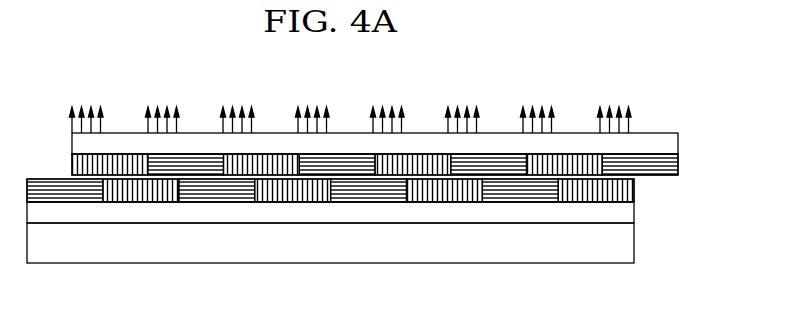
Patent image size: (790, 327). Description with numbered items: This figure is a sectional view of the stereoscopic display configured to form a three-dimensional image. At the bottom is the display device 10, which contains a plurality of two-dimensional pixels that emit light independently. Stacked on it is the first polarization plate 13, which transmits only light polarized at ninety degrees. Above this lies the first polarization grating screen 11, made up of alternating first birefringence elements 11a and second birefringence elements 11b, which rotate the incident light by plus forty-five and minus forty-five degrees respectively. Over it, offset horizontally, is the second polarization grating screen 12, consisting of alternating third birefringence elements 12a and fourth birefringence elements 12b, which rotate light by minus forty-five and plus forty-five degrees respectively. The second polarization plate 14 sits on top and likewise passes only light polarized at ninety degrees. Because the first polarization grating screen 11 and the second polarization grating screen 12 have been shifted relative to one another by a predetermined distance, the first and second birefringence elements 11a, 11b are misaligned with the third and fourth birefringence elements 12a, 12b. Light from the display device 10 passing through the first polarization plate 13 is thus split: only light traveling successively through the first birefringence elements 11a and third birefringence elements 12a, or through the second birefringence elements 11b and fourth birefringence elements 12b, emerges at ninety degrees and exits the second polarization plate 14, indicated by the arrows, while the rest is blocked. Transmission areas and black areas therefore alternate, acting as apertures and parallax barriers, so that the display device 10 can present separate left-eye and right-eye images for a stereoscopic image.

The display device 10 is at (627, 240).
The first polarization plate 13 is at (627, 213).
The first polarization grating screen 11 is at (367, 248).
The first birefringence elements 11a is at (58, 193).
The second birefringence elements 11b is at (145, 193).
The second polarization grating screen 12 is at (412, 110).
The third birefringence elements 12a is at (125, 163).
The fourth birefringence elements 12b is at (200, 165).
The second polarization plate 14 is at (672, 143).